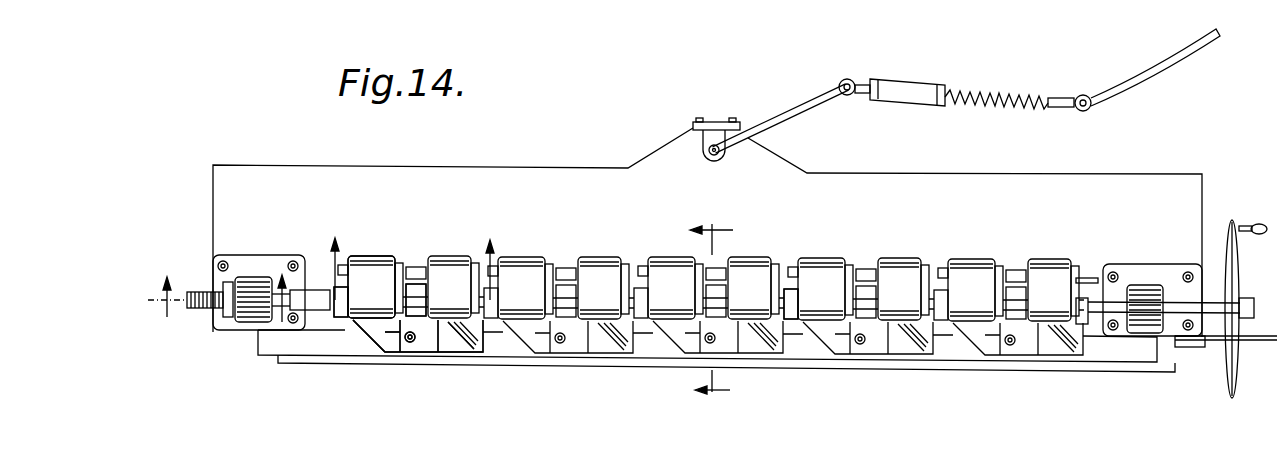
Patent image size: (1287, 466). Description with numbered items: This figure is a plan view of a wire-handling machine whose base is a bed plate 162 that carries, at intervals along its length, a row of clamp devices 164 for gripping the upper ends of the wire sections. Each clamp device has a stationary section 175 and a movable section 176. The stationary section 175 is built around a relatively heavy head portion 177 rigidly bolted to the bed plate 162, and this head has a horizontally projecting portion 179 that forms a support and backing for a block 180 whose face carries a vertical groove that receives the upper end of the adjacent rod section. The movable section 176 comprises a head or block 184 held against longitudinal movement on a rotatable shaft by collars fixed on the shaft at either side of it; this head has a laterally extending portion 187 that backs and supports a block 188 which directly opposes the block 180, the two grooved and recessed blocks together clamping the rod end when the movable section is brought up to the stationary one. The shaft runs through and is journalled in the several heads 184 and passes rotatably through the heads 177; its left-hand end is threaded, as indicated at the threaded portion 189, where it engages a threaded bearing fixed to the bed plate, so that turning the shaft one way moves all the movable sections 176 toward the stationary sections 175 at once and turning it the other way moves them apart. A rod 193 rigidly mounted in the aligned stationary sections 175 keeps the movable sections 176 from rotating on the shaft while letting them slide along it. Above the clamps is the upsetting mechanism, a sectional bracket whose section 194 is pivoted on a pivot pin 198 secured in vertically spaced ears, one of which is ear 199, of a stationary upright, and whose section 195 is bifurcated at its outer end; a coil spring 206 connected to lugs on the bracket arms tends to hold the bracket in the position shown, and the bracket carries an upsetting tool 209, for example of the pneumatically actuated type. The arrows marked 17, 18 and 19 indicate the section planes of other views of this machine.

The section line 17- 17 is at (414, 262).
The section line 18- 18 is at (711, 311).
The section line 19- 19 is at (210, 314).
The bed plate 162 is at (1186, 220).
The clamp devices 164 is at (408, 343).
The stationary section 175 is at (392, 340).
The movable section 176 is at (450, 345).
The head portion 177 is at (368, 330).
The horizontally projecting portion 179 is at (377, 340).
The block 180 is at (410, 342).
The head or block 184 is at (445, 256).
The laterally extending portion 187 is at (440, 330).
The block 188 is at (420, 332).
The threaded portion 189 is at (200, 293).
The rod 193 is at (793, 260).
The bracket section 194 is at (802, 108).
The bracket section 195 is at (907, 95).
The pivot pin 198 is at (716, 156).
The ear 199 is at (702, 160).
The coil spring 206 is at (1010, 95).
The upsetting tool 209 is at (1093, 108).